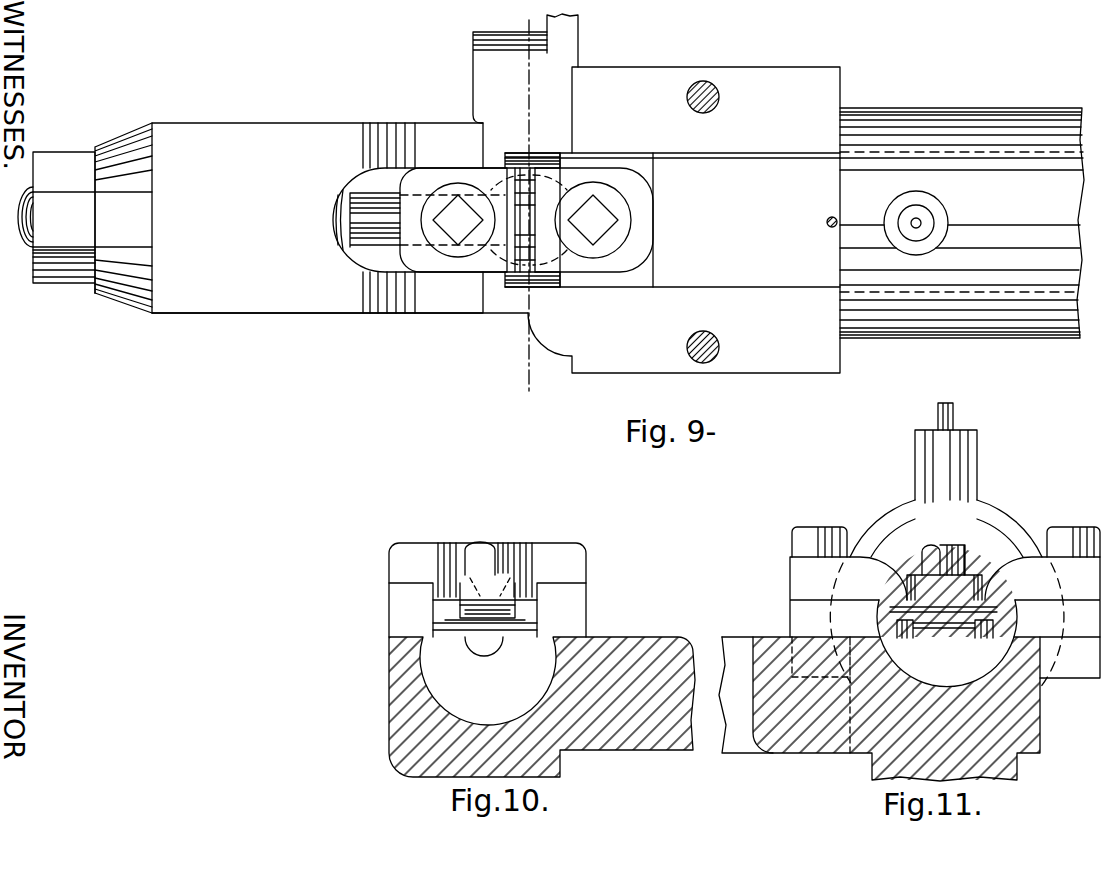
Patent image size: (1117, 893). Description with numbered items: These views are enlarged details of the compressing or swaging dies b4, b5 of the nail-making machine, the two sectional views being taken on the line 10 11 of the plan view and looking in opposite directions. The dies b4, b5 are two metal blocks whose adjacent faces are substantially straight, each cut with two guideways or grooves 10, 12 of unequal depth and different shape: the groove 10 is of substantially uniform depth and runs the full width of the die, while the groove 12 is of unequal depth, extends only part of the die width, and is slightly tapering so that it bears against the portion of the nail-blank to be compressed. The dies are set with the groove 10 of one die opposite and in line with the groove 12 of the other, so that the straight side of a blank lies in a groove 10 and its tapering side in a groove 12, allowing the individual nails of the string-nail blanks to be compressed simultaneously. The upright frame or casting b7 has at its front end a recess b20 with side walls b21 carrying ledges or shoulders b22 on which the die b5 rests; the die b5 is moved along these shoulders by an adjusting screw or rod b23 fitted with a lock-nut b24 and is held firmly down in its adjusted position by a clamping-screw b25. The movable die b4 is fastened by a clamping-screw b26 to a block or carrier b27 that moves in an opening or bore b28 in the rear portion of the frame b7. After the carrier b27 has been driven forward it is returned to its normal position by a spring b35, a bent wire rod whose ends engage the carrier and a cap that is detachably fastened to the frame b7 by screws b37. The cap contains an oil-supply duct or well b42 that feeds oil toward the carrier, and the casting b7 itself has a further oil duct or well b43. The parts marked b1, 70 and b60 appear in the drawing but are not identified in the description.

In FIG. 9, the groove 10 is at (510, 66).
In FIG. 9, the section line 11 is at (514, 216).
In FIG. 10, the groove 12 is at (460, 605).
In FIG. 11, the groove 12 is at (940, 633).
In FIG. 10, the ring 70 is at (442, 628).
In FIG. 11, the ring 70 is at (900, 610).
In FIG. 9, the shaft body b1 is at (211, 313).
In FIG. 9, the movable swaging die b4 is at (640, 247).
In FIG. 11, the movable swaging die b4 is at (1003, 607).
In FIG. 9, the swaging die b5 is at (440, 272).
In FIG. 10, the swaging die b5 is at (540, 627).
In FIG. 9, the upright frame b7 is at (802, 388).
In FIG. 10, the upright frame b7 is at (410, 771).
In FIG. 11, the upright frame b7 is at (1036, 733).
In FIG. 9, the recess b20 is at (356, 178).
In FIG. 10, the recess b20 is at (560, 584).
In FIG. 9, the side walls b21 is at (456, 325).
In FIG. 10, the side walls b21 is at (587, 598).
In FIG. 9, the ledges or shoulders b22 is at (402, 178).
In FIG. 10, the ledges or shoulders b22 is at (582, 641).
In FIG. 9, the adjusting screw or rod b23 is at (340, 250).
In FIG. 9, the lock-nut b24 is at (55, 282).
In FIG. 9, the clamping-screw b25 is at (458, 200).
In FIG. 10, the clamping-screw b25 is at (490, 546).
In FIG. 9, the clamping-screw b26 is at (612, 222).
In FIG. 11, the clamping-screw b26 is at (928, 555).
In FIG. 9, the die-carrier b27 is at (765, 272).
In FIG. 11, the bore b28 is at (990, 678).
In FIG. 9, the spring b35 is at (828, 219).
In FIG. 11, the spring b35 is at (938, 412).
In FIG. 9, the screws b37 is at (720, 97).
In FIG. 11, the screws b37 is at (1068, 527).
In FIG. 11, the oil-supply duct or well b42 is at (968, 462).
In FIG. 9, the oil duct or well b43 is at (940, 208).
In FIG. 9, the bracket b60 is at (579, 38).